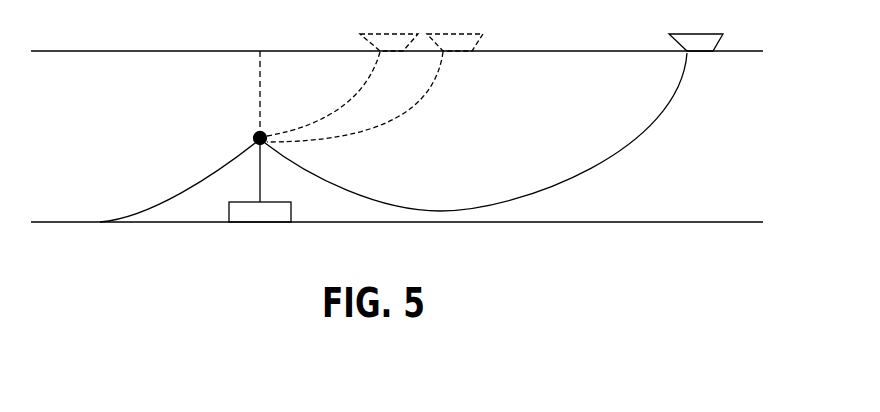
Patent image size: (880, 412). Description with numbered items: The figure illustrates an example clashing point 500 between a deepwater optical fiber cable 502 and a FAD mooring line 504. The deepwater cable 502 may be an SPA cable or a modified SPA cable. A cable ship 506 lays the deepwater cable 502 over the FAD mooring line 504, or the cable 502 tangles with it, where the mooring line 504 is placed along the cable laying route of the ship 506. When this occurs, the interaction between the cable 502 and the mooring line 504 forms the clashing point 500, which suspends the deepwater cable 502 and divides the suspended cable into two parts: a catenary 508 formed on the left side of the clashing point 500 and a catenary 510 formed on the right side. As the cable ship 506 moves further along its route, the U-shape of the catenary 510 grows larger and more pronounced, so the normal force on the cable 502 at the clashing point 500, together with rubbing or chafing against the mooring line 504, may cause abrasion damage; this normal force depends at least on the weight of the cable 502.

The clashing point 500 is at (245, 138).
The deepwater optical fiber cable 502 is at (574, 132).
The FAD mooring line 504 is at (260, 136).
The cable ship 506 is at (495, 76).
The catenary 508 is at (179, 181).
The catenary 510 is at (352, 177).